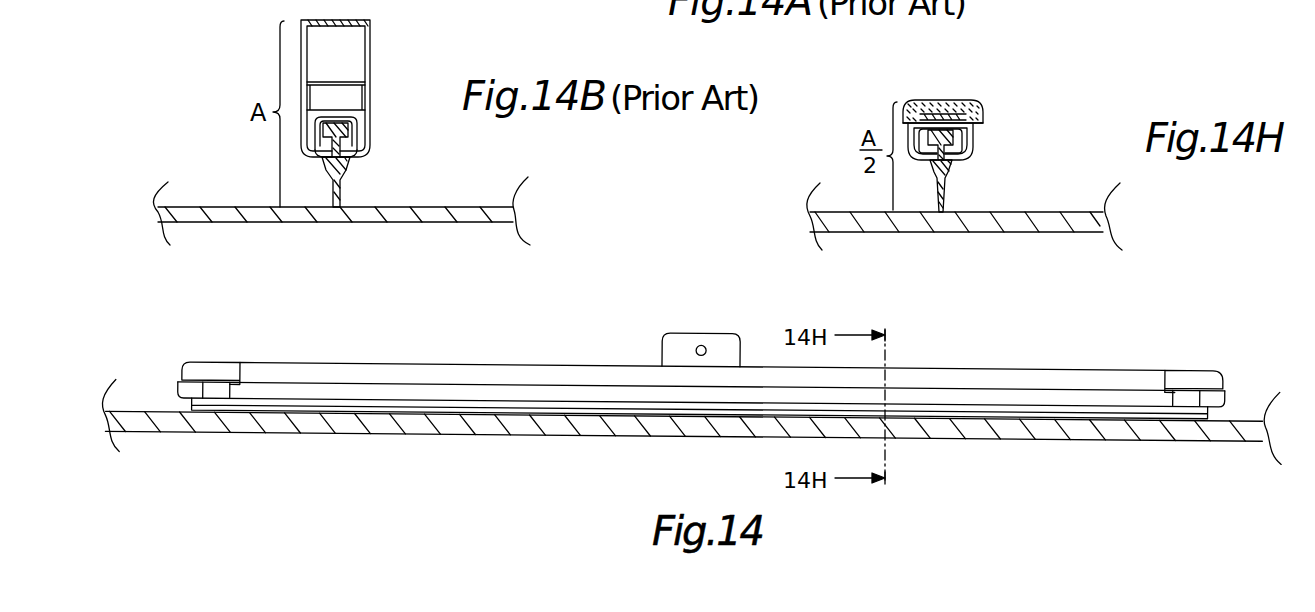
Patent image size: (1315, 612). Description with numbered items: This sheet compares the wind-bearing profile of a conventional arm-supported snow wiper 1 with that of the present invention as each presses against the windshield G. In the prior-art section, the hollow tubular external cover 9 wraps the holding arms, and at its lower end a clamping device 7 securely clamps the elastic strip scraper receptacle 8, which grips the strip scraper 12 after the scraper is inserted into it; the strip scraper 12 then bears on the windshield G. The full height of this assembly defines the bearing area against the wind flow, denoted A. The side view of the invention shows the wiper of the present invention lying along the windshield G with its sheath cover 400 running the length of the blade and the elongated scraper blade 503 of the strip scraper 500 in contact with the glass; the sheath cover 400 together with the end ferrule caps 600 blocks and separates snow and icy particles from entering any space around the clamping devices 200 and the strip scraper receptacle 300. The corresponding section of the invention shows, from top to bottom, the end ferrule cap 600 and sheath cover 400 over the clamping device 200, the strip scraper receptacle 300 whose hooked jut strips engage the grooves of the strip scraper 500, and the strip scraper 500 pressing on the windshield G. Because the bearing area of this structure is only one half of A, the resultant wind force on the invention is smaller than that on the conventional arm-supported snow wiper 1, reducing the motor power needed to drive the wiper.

In FIG. 14B, the conventional arm-supported snow wiper 1 is at (374, 92).
In FIG. 14B, the clamping device 7 is at (362, 130).
In FIG. 14B, the elastic strip scraper receptacle 8 is at (364, 144).
In FIG. 14B, the hollow tubular external cover 9 is at (370, 22).
In FIG. 14B, the strip scraper 12 is at (340, 182).
In FIG. 14B, the windshield G is at (293, 215).
In FIG. 14H, the windshield G is at (983, 223).
In FIG. 14, the windshield G is at (307, 427).
In FIG. 14H, the clamping devices 200 is at (974, 130).
In FIG. 14H, the strip scraper receptacle 300 is at (970, 148).
In FIG. 14H, the sheath cover 400 is at (984, 113).
In FIG. 14, the sheath cover 400 is at (585, 374).
In FIG. 14H, the strip scraper 500 is at (953, 180).
In FIG. 14, the elongated scraper blade 503 is at (367, 406).
In FIG. 14H, the end ferrule caps 600 is at (978, 104).